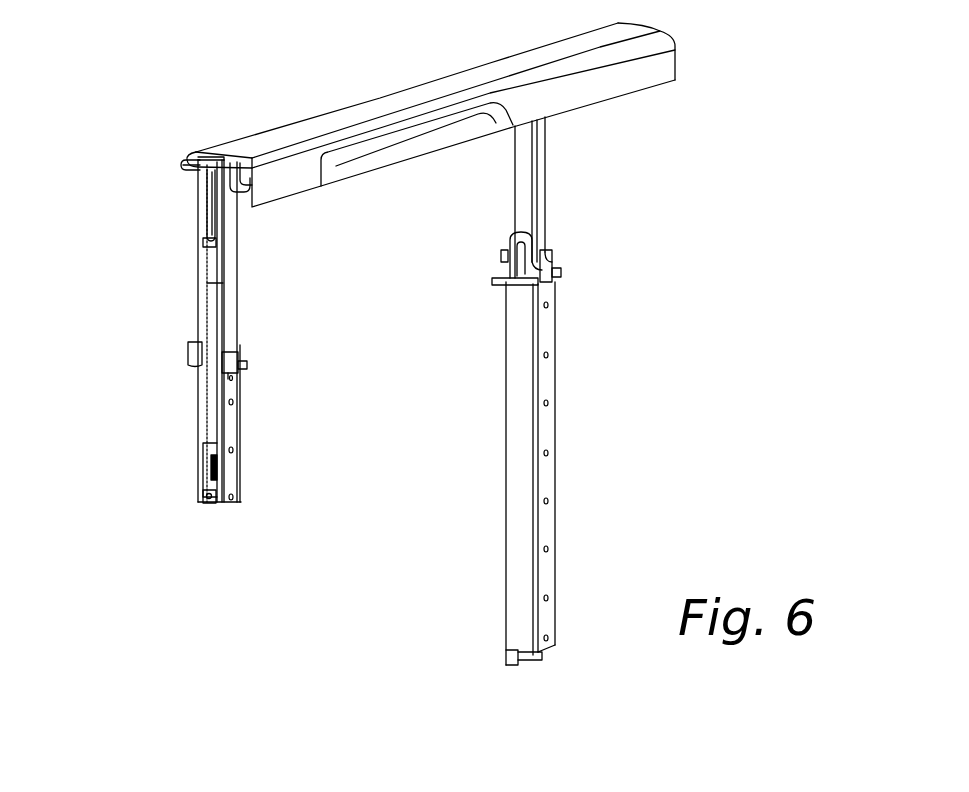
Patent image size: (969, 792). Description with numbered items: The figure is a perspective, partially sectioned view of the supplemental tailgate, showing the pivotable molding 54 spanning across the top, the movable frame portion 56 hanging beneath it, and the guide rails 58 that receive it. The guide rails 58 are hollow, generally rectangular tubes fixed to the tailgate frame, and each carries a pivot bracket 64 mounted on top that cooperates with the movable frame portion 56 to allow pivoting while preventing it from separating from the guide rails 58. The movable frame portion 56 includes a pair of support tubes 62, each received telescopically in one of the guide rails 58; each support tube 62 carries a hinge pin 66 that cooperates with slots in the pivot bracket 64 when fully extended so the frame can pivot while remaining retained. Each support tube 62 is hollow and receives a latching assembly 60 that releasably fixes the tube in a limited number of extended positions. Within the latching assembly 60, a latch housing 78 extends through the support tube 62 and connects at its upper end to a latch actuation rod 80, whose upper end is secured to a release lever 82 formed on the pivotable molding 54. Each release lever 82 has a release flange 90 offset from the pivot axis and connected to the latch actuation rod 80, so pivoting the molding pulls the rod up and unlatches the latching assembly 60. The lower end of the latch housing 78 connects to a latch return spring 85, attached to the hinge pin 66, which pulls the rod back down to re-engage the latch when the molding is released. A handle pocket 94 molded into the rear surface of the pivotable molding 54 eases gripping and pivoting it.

The pivotable molding 54 is at (418, 86).
The movable frame portion 56 is at (578, 134).
The guide rail 58 is at (557, 458).
The latching assembly 60 is at (148, 428).
The support tube 62 is at (545, 188).
The pivot bracket 64 is at (547, 243).
The hinge pin 66 is at (203, 498).
The latch housing 78 is at (200, 258).
The latch actuation rod 80 is at (213, 208).
The release lever 82 is at (183, 163).
The latch return spring 85 is at (213, 472).
The release flange 90 is at (212, 182).
The handle pocket 94 is at (323, 179).